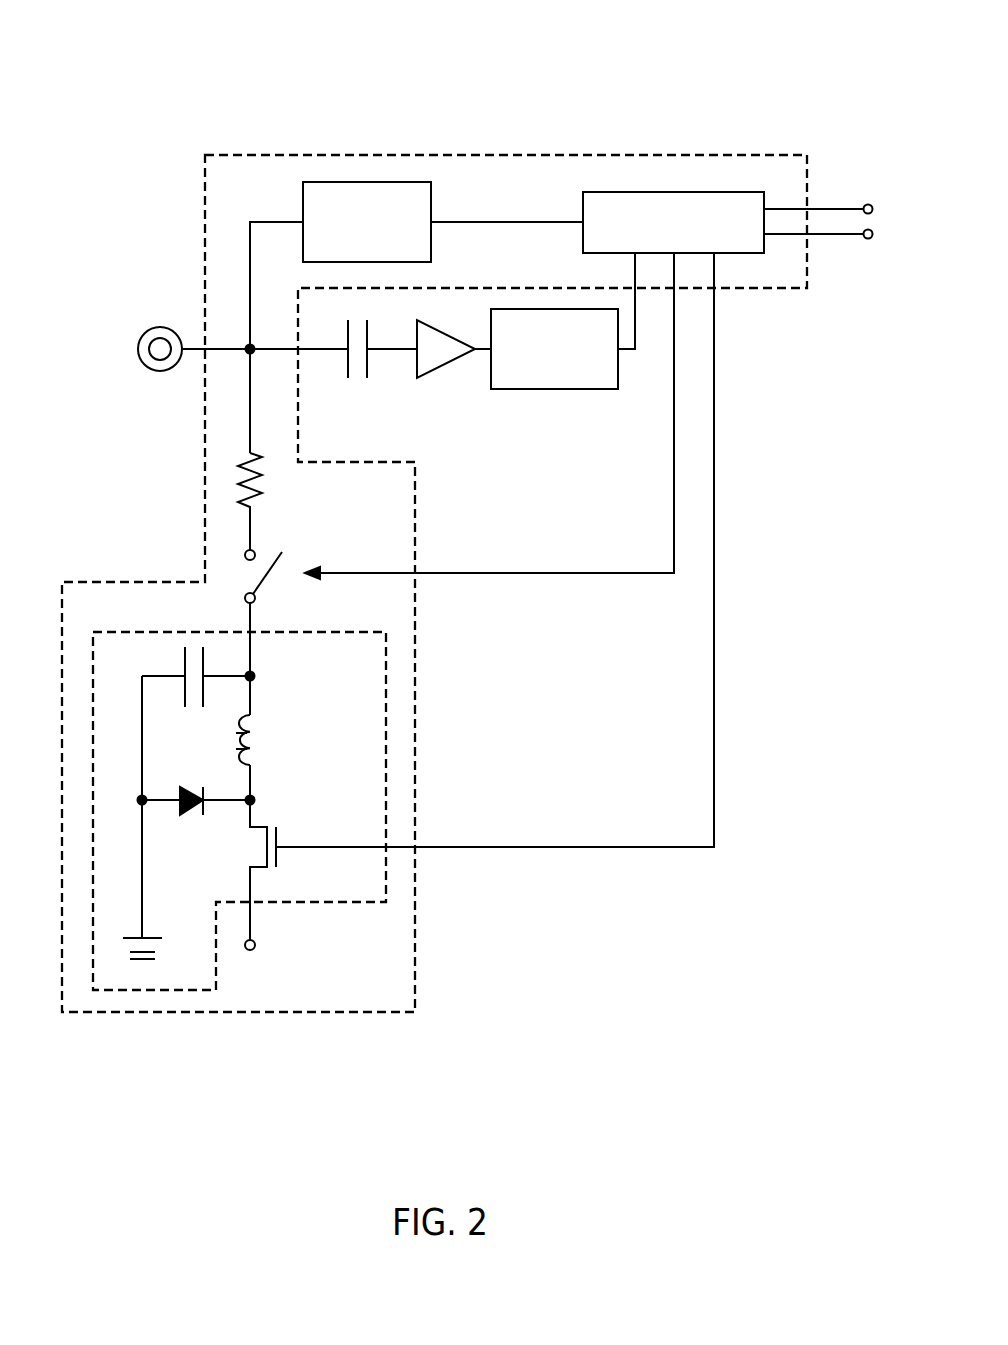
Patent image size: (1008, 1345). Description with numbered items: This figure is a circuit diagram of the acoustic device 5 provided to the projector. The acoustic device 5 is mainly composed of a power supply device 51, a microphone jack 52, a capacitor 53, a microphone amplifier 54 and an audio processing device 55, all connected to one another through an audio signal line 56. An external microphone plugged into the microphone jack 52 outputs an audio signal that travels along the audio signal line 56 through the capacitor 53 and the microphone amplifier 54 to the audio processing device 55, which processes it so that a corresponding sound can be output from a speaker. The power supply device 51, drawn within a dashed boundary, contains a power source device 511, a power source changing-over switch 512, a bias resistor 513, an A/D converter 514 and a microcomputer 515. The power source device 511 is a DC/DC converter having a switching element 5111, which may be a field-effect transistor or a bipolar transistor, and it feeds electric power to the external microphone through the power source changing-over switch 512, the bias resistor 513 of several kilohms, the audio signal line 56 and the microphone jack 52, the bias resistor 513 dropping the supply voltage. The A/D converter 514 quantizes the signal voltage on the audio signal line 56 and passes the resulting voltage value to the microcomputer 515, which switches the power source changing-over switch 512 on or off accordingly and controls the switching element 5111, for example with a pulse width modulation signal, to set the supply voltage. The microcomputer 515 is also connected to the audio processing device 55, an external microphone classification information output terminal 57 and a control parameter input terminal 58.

The acoustic device 5 is at (534, 108).
The power supply device 51 is at (648, 154).
The microphone jack 52 is at (150, 372).
The capacitor 53 is at (367, 388).
The microphone amplifier 54 is at (431, 371).
The audio processing device 55 is at (546, 390).
The audio signal line 56 is at (278, 345).
The external microphone classification information output terminal 57 is at (865, 205).
The control parameter input terminal 58 is at (867, 240).
The power source device 511 is at (386, 656).
The power source changing-over switch 512 is at (284, 556).
The bias resistor 513 is at (264, 490).
The A/D converter 514 is at (366, 182).
The microcomputer 515 is at (682, 192).
The switching element 5111 is at (270, 815).